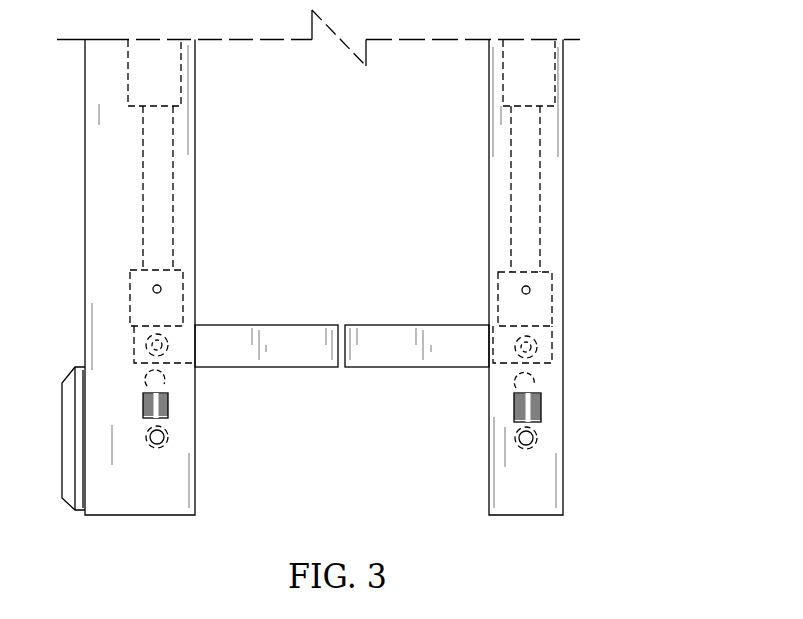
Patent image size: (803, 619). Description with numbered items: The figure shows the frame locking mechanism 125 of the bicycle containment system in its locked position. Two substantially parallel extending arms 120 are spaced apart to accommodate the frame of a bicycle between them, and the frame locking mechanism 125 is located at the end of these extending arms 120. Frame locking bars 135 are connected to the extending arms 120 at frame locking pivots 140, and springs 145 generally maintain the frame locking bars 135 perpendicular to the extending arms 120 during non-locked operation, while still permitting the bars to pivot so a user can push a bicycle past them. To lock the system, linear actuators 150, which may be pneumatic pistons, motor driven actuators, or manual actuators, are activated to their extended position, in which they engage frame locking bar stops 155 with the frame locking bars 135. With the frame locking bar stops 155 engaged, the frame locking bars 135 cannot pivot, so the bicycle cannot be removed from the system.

The frame locking mechanism 125 is at (633, 91).
The extending arms 120 is at (100, 203).
The linear actuators 150 is at (167, 83).
The frame locking bar stops 155 is at (177, 298).
The frame locking bars 135 is at (295, 332).
The frame locking pivots 140 is at (137, 345).
The springs 145 is at (168, 408).